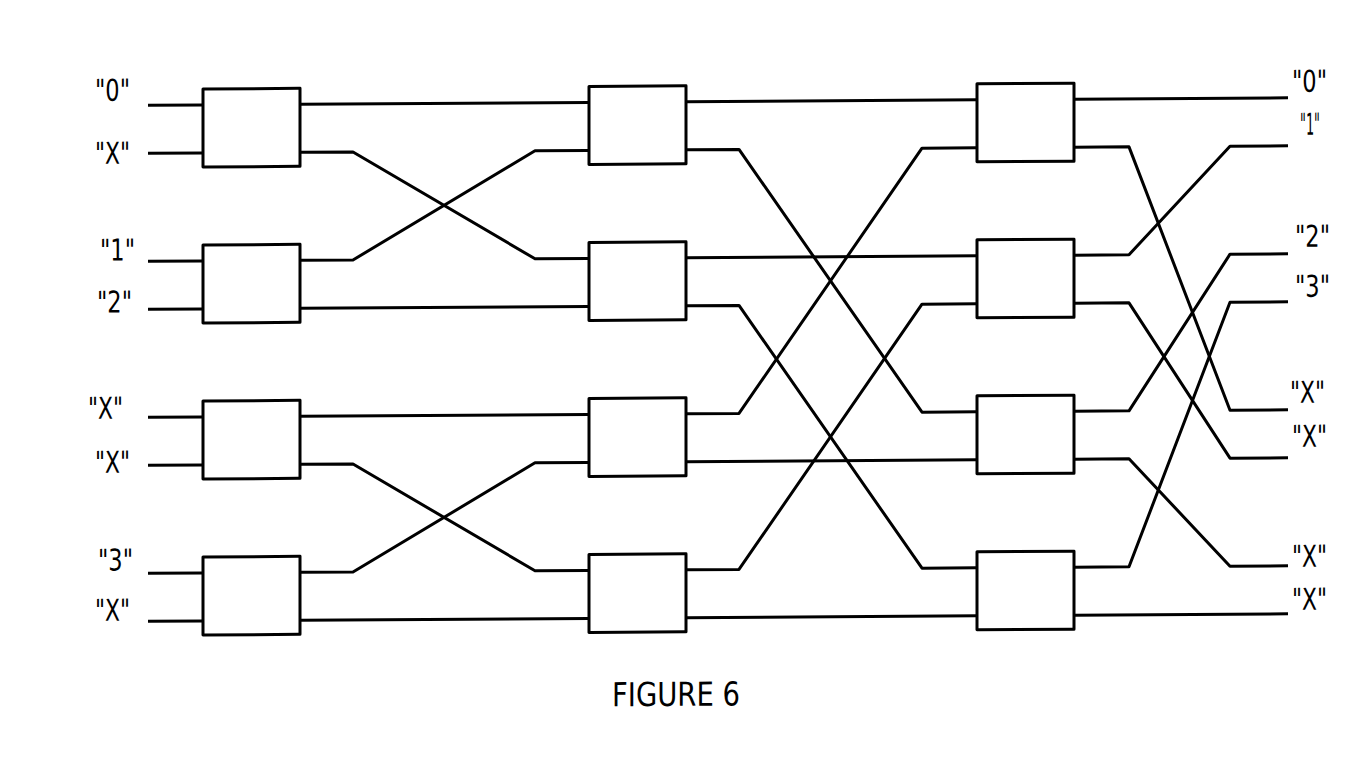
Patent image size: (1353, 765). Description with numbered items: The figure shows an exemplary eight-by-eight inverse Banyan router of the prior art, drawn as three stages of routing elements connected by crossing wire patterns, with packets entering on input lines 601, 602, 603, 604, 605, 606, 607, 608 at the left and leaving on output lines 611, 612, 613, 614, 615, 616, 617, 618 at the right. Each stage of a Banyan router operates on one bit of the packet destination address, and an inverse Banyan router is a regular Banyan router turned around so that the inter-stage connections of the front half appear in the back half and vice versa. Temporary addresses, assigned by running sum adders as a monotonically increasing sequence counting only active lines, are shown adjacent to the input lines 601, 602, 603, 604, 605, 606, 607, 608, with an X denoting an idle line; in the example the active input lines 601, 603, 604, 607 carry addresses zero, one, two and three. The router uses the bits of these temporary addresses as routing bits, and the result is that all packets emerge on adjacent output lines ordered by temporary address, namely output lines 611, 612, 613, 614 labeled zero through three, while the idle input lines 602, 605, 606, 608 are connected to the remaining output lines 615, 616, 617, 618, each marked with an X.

The input line 601 is at (175, 89).
The input line 602 is at (175, 137).
The input line 603 is at (175, 245).
The input line 604 is at (175, 293).
The input line 605 is at (175, 401).
The input line 606 is at (175, 449).
The input line 607 is at (175, 557).
The input line 608 is at (175, 605).
The output line 611 is at (1181, 79).
The output line 612 is at (1181, 181).
The output line 613 is at (1181, 313).
The output line 614 is at (1181, 415).
The output line 615 is at (1181, 278).
The output line 616 is at (1181, 380).
The output line 617 is at (1181, 512).
The output line 618 is at (1181, 595).